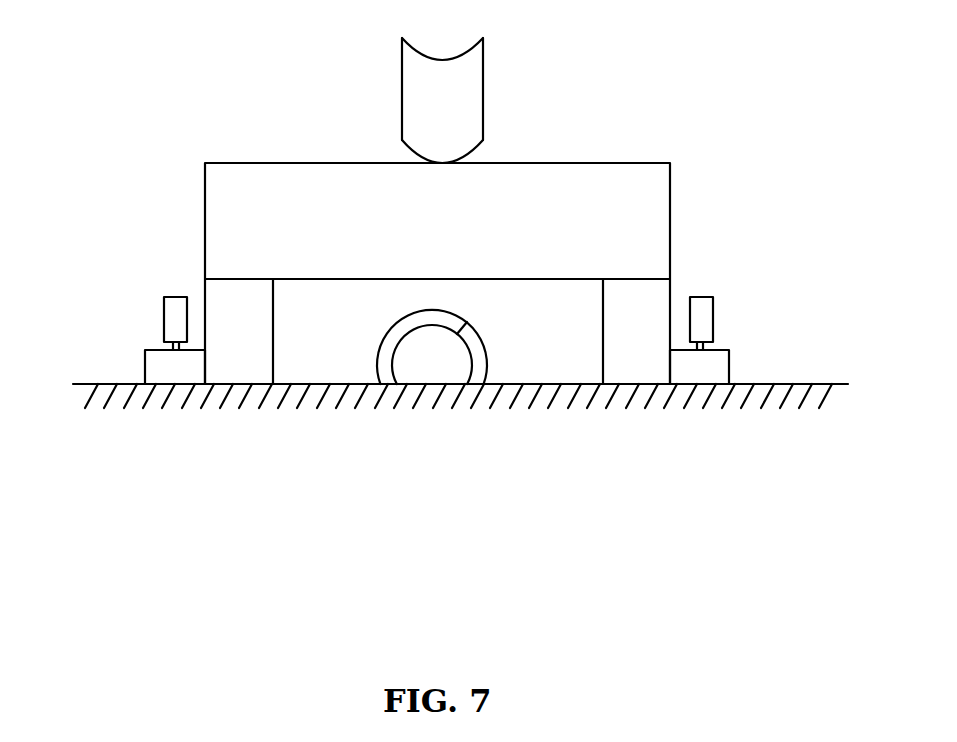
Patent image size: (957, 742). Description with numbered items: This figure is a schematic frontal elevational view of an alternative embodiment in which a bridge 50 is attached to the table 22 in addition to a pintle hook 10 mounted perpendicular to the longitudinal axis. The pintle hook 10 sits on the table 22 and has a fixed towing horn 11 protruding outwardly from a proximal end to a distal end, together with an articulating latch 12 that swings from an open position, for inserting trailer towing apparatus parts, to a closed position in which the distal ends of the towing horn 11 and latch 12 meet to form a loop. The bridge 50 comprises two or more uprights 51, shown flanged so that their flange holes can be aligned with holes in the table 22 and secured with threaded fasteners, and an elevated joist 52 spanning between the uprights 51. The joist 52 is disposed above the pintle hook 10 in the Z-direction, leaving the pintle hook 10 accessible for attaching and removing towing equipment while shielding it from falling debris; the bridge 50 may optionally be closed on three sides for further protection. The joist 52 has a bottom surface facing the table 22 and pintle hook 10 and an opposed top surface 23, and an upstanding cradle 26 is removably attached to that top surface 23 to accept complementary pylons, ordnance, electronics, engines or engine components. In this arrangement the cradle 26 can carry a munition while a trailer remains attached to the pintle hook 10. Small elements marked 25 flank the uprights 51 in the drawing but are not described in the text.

The pintle hook 10 is at (439, 337).
The towing horn 11 is at (378, 356).
The articulating latch 12 is at (477, 350).
The table 22 is at (617, 385).
The top surface 23 is at (300, 384).
The sensors 25 is at (173, 318).
The cradle 26 is at (423, 98).
The bridge 50 is at (620, 53).
The uprights 51 is at (220, 292).
The elevated joist 52 is at (655, 210).